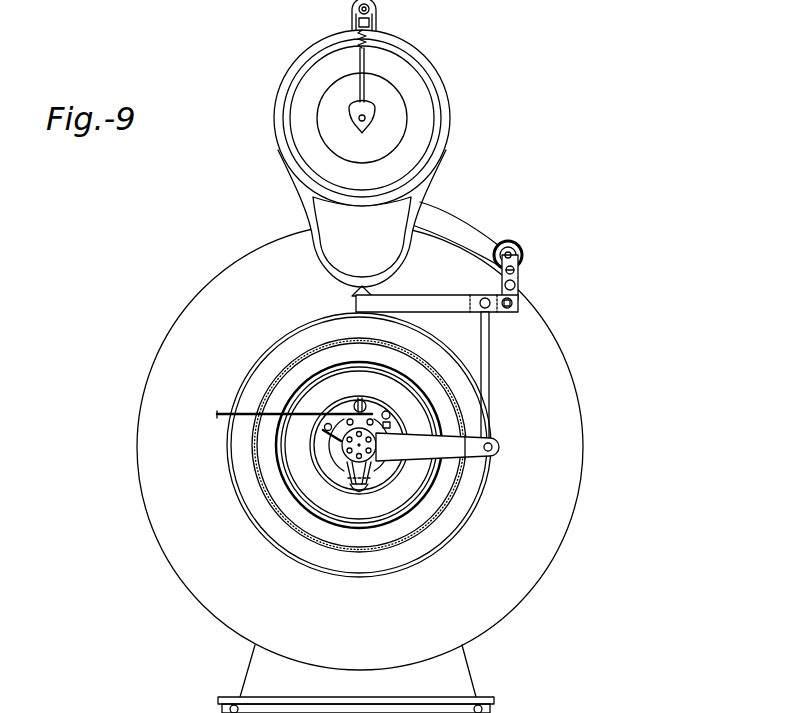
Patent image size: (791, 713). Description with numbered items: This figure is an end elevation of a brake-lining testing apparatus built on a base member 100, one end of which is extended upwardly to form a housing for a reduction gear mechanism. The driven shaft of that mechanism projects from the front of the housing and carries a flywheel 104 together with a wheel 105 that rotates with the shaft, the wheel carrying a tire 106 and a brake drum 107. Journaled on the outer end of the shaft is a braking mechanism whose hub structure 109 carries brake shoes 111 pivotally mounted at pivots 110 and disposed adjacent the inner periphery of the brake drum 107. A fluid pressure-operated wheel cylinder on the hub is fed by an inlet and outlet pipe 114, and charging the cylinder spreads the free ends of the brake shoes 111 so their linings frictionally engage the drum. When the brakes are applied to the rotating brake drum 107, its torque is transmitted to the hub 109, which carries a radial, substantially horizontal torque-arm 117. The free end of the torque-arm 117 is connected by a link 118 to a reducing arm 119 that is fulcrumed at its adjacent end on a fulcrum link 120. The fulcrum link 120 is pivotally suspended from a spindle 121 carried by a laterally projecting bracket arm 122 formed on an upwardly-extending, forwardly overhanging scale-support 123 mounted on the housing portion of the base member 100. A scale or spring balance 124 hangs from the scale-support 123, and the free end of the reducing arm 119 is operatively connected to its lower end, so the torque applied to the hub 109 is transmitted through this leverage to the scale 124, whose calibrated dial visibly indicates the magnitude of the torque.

The base member 100 is at (465, 669).
The flywheel 104 is at (148, 517).
The wheel 105 is at (262, 486).
The tire 106 is at (337, 571).
The brake drum 107 is at (342, 467).
The hub structure 109 is at (335, 452).
The pivot 110 is at (359, 492).
The brake shoes 111 is at (317, 444).
The inlet and outlet pipe 114 is at (218, 414).
The torque-arm 117 is at (453, 452).
The link 118 is at (489, 369).
The reducing arm 119 is at (428, 295).
The fulcrum link 120 is at (521, 289).
The spindle 121 is at (523, 254).
The bracket arm 122 is at (478, 237).
The scale-support 123 is at (380, 14).
The scale or spring balance 124 is at (450, 101).